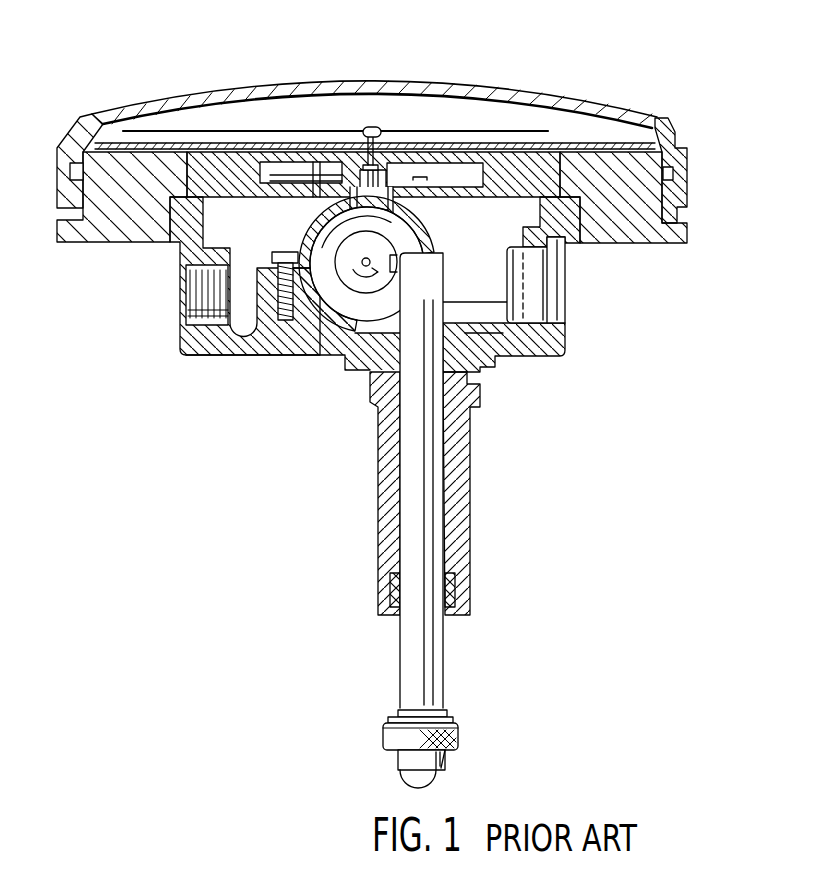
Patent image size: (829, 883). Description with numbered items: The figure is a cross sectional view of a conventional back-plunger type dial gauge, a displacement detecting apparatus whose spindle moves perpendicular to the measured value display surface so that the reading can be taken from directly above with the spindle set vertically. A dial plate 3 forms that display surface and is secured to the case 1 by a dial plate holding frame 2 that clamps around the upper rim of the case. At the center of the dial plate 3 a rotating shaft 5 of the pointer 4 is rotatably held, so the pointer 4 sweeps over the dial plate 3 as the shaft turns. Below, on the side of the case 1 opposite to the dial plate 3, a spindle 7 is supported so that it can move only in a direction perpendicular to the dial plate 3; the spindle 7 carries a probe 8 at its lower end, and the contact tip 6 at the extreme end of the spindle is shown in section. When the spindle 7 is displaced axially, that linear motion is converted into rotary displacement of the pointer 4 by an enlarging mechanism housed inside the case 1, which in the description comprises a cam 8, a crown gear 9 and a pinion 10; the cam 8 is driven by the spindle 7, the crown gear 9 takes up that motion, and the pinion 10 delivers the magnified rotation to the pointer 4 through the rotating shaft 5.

The case 1 is at (563, 356).
The dial plate holding frame 2 is at (672, 132).
The dial plate 3 is at (595, 140).
The pointer 4 is at (283, 118).
The rotating shaft 5 is at (374, 127).
The contact tip 6 is at (402, 761).
The spindle 7 is at (438, 651).
The probe 8 is at (368, 290).
The crown gear 9 is at (343, 302).
The pinion 10 is at (397, 182).